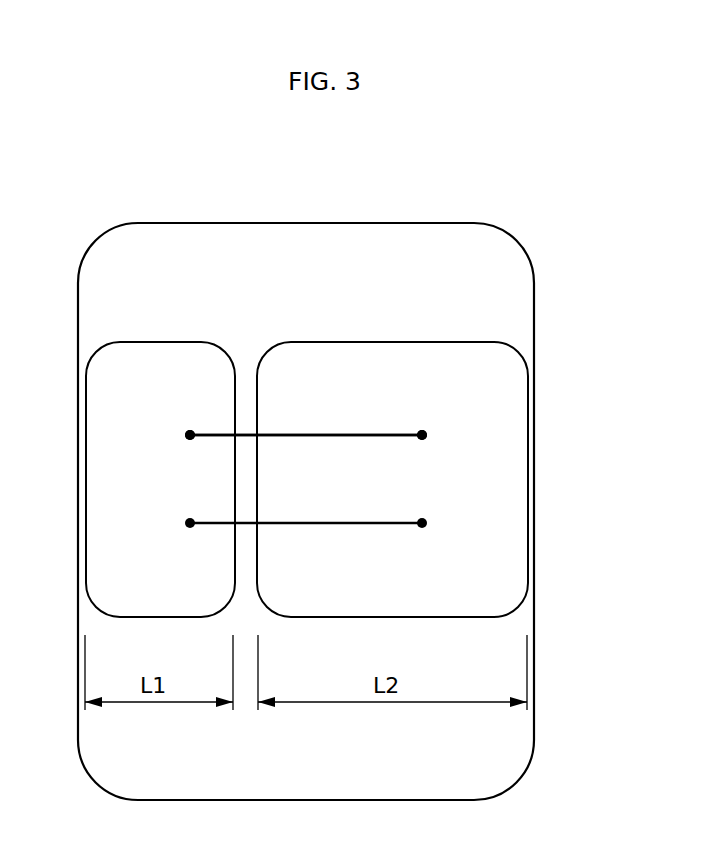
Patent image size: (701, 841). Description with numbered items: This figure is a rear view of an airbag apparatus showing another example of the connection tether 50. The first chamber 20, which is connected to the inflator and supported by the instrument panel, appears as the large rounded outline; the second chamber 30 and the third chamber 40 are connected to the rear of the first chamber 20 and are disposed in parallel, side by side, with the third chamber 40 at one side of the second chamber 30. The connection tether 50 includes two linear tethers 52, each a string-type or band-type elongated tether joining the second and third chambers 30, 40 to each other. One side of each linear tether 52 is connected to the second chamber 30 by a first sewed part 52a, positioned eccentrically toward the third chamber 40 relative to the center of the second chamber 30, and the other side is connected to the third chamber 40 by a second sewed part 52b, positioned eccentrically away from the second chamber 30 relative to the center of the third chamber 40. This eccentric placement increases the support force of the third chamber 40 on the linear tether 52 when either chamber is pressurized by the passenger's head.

The first chamber 20 is at (525, 252).
The second chamber 30 is at (120, 512).
The third chamber 40 is at (495, 495).
The connection tether 50 is at (345, 415).
The linear tether 52 is at (380, 433).
The first sewed part 52a is at (185, 433).
The second sewed part 52b is at (430, 437).